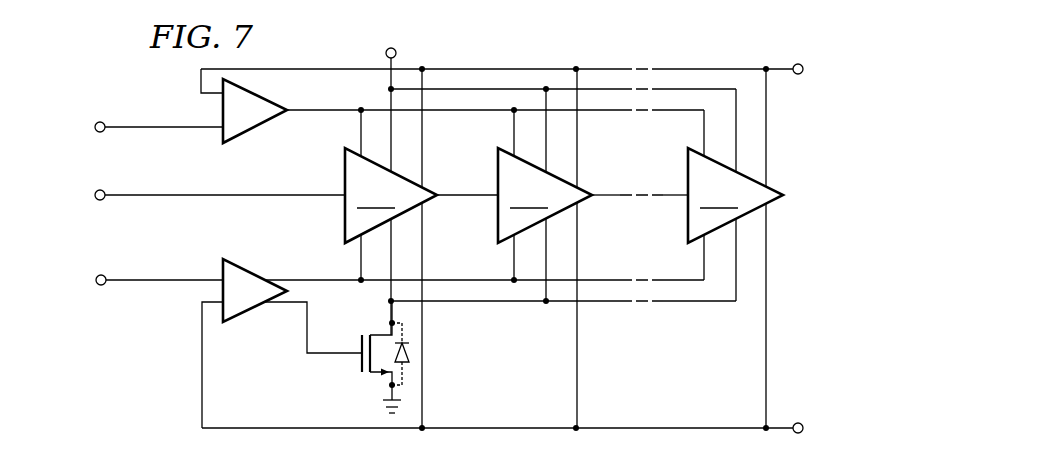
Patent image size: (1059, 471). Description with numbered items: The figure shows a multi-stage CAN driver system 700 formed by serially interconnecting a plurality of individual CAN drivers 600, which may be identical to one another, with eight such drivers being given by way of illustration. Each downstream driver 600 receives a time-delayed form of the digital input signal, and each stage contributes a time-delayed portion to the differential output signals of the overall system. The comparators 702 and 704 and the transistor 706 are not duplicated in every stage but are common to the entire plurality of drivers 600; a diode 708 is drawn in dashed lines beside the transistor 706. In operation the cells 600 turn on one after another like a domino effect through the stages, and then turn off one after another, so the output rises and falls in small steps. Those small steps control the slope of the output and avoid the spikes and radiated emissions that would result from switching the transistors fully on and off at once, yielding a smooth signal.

The CAN transceiver driver circuit 700 is at (145, 343).
The comparator 702 is at (257, 128).
The comparator 704 is at (255, 268).
The transistor 706 is at (360, 360).
The diode 708 is at (410, 357).
The CAN driver 600 is at (553, 248).